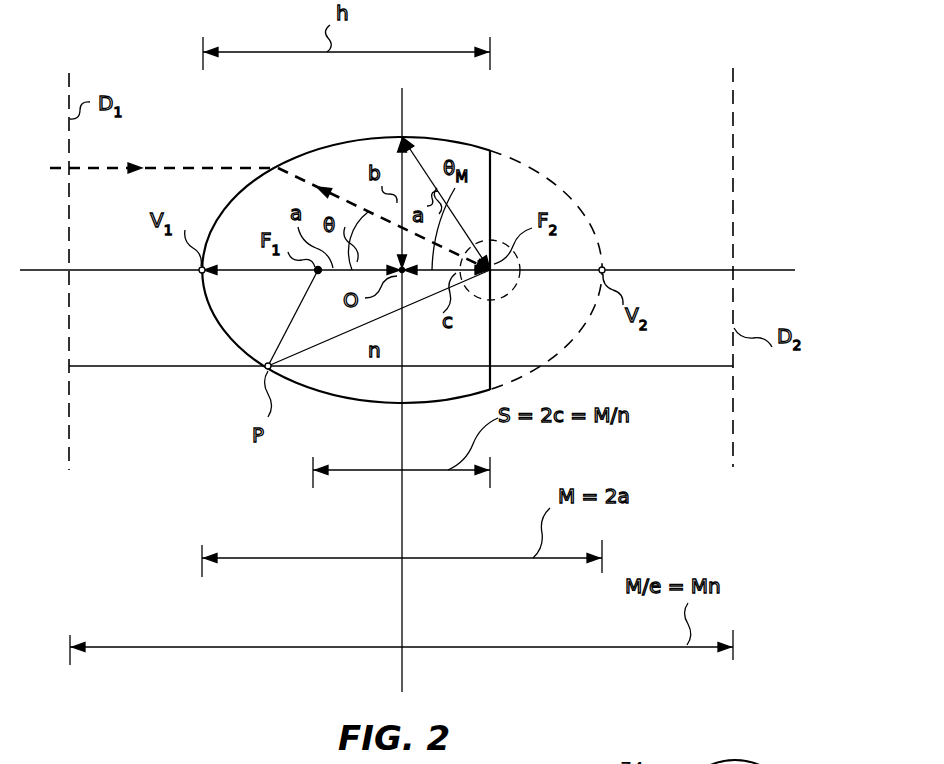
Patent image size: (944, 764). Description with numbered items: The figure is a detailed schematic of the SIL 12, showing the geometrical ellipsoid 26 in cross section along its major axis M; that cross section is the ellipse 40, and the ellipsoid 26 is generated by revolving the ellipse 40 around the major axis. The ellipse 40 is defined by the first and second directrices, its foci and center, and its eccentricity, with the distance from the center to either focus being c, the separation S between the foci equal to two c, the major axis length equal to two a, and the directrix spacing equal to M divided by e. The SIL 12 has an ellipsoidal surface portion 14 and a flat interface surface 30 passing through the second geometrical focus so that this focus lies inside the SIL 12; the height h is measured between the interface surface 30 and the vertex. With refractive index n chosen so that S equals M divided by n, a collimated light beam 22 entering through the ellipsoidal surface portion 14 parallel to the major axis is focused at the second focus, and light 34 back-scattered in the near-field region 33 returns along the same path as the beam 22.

The SIL 12 is at (375, 251).
The ellipsoidal surface portion 14 is at (328, 147).
The collimated light beam 22 is at (270, 186).
The back-scattered light 34 is at (203, 166).
The ellipsoid 26 is at (543, 173).
The flat interface surface 30 is at (492, 203).
The region of interest 33 is at (510, 290).
The ellipse 40 is at (490, 112).